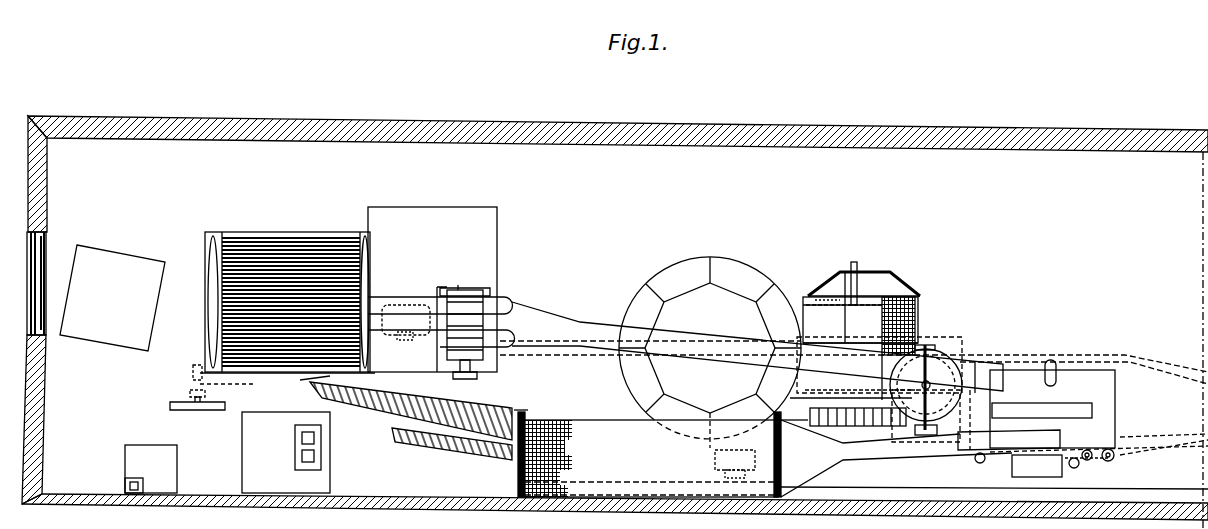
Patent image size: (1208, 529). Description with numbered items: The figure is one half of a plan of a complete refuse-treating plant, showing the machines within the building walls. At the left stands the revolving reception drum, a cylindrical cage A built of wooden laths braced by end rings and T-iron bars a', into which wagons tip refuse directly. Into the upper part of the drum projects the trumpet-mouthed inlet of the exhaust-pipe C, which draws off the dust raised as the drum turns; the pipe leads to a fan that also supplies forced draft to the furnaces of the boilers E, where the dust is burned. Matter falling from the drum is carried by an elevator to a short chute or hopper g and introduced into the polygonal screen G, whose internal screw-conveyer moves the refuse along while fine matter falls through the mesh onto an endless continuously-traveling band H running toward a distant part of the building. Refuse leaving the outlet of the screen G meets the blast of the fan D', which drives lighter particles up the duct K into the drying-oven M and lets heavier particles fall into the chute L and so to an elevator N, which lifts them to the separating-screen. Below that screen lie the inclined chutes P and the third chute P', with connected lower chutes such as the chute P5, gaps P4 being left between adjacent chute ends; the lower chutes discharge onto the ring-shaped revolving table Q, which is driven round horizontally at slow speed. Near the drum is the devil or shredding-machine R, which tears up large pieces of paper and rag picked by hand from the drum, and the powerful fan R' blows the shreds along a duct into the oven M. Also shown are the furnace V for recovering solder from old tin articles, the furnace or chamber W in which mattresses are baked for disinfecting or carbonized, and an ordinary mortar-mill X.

The cylindrical cage A is at (287, 302).
The exhaust-pipe C is at (405, 303).
The powerful fan R' is at (405, 332).
The devil or shredding-machine R is at (477, 333).
The revolving table Q is at (710, 352).
The inclined chutes P is at (860, 307).
The third chute P' is at (864, 284).
The gaps P4 is at (858, 272).
The chute P5 is at (826, 358).
The mortar-mill X is at (945, 365).
The chute L is at (851, 414).
The duct K is at (928, 445).
The elevator N is at (860, 435).
The drying-oven M is at (1045, 418).
The endless continuously-traveling band H is at (1175, 498).
The screen G is at (665, 454).
The fan D' is at (735, 464).
The boilers E is at (406, 418).
The short chute or hopper g is at (510, 440).
The T-iron bars a' is at (207, 387).
The furnace V is at (151, 469).
The furnace or chamber W is at (286, 452).